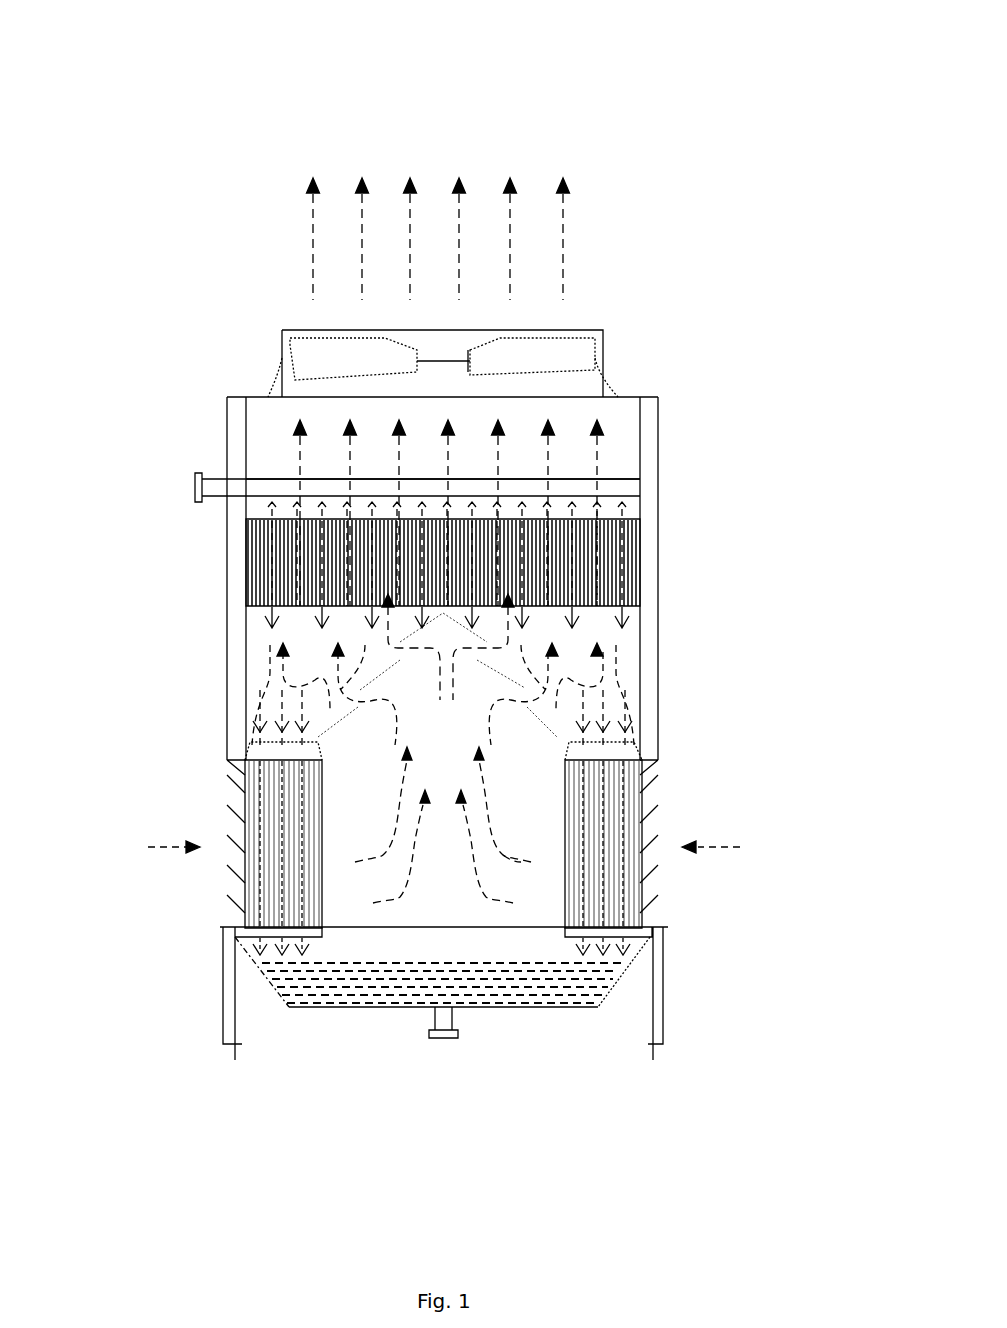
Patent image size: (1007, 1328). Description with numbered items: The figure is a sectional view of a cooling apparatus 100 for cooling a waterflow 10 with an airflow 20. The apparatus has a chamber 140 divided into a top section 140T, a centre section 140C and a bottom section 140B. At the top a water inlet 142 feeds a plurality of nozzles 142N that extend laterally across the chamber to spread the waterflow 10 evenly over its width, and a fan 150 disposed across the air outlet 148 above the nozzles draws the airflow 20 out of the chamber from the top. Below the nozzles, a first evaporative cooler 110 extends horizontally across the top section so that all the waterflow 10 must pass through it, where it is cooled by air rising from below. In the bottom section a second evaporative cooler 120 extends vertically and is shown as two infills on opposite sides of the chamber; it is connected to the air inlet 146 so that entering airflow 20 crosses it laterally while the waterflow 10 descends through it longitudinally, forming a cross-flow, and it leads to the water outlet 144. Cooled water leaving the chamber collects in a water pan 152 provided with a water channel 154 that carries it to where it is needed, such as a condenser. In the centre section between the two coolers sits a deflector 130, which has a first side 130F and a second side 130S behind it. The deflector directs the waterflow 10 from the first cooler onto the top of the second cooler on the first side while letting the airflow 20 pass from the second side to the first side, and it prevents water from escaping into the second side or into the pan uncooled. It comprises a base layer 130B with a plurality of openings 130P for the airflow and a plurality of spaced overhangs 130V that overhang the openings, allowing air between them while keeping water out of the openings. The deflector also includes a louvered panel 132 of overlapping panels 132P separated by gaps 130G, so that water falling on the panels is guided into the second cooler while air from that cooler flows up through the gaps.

The cooling apparatus 100 is at (788, 29).
The waterflow 10 is at (270, 680).
The airflow 20 is at (497, 851).
The first evaporative cooler 110 is at (257, 550).
The second evaporative cooler 120 is at (257, 793).
The deflector 130 is at (330, 725).
The base layer 130B is at (487, 660).
The first side 130F is at (297, 636).
The air gap 130G is at (403, 707).
The openings 130P is at (363, 705).
The second side 130S is at (469, 743).
The overhangs 130V is at (437, 698).
The louvered panel 132 is at (538, 718).
The overlapping panels 132P is at (547, 720).
The chamber 140 is at (627, 647).
The top section 140T is at (672, 562).
The centre section 140C is at (672, 732).
The bottom section 140B is at (670, 893).
The water inlet 142 is at (195, 480).
The nozzles 142N is at (268, 498).
The water outlet 144 is at (257, 930).
The air inlet 146 is at (660, 813).
The air outlet 148 is at (585, 330).
The fan 150 is at (585, 350).
The water pan 152 is at (373, 1006).
The water channel 154 is at (443, 1038).